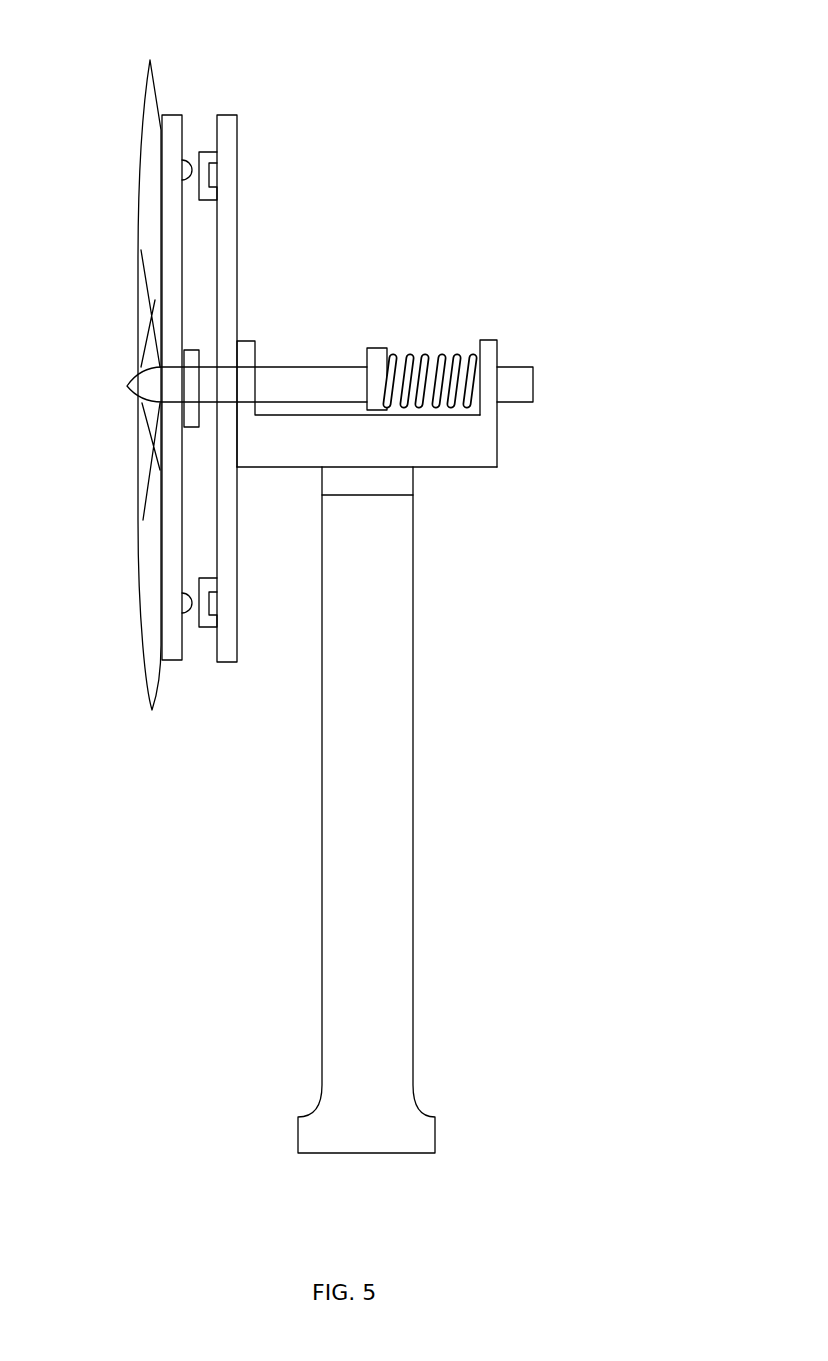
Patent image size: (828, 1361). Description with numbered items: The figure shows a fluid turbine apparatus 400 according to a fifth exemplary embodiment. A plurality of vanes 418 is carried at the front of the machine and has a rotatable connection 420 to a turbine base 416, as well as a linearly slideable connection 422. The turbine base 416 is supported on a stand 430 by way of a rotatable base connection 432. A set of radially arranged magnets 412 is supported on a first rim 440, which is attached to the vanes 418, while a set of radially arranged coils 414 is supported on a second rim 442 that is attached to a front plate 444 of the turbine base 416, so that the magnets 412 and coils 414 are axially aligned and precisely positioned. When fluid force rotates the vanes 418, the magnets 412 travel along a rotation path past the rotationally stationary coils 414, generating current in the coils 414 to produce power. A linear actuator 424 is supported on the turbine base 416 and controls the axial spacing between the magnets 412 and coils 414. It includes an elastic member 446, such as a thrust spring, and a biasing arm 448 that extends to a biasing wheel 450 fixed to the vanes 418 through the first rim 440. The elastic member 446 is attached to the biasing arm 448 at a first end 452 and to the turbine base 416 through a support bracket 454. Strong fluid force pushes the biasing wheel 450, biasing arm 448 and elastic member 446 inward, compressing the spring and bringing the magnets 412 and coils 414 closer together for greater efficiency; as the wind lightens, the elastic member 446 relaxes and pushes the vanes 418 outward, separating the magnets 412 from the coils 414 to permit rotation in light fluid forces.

The fluid turbine apparatus 400 is at (380, 589).
The radially arranged magnets 412 is at (187, 597).
The radially arranged coils 414 is at (208, 150).
The turbine base 416 is at (406, 398).
The vanes 418 is at (152, 95).
The rotatable connection 420 is at (208, 363).
The linearly slideable connection 422 is at (517, 352).
The linear actuator 424 is at (425, 338).
The stand 430 is at (408, 810).
The rotatable base connection 432 is at (405, 485).
The first rim 440 is at (170, 200).
The second rim 442 is at (232, 167).
The front plate 444 is at (238, 433).
The elastic member 446 is at (462, 352).
The biasing arm 448 is at (270, 370).
The biasing wheel 450 is at (197, 352).
The first end 452 is at (402, 347).
The support bracket 454 is at (487, 388).